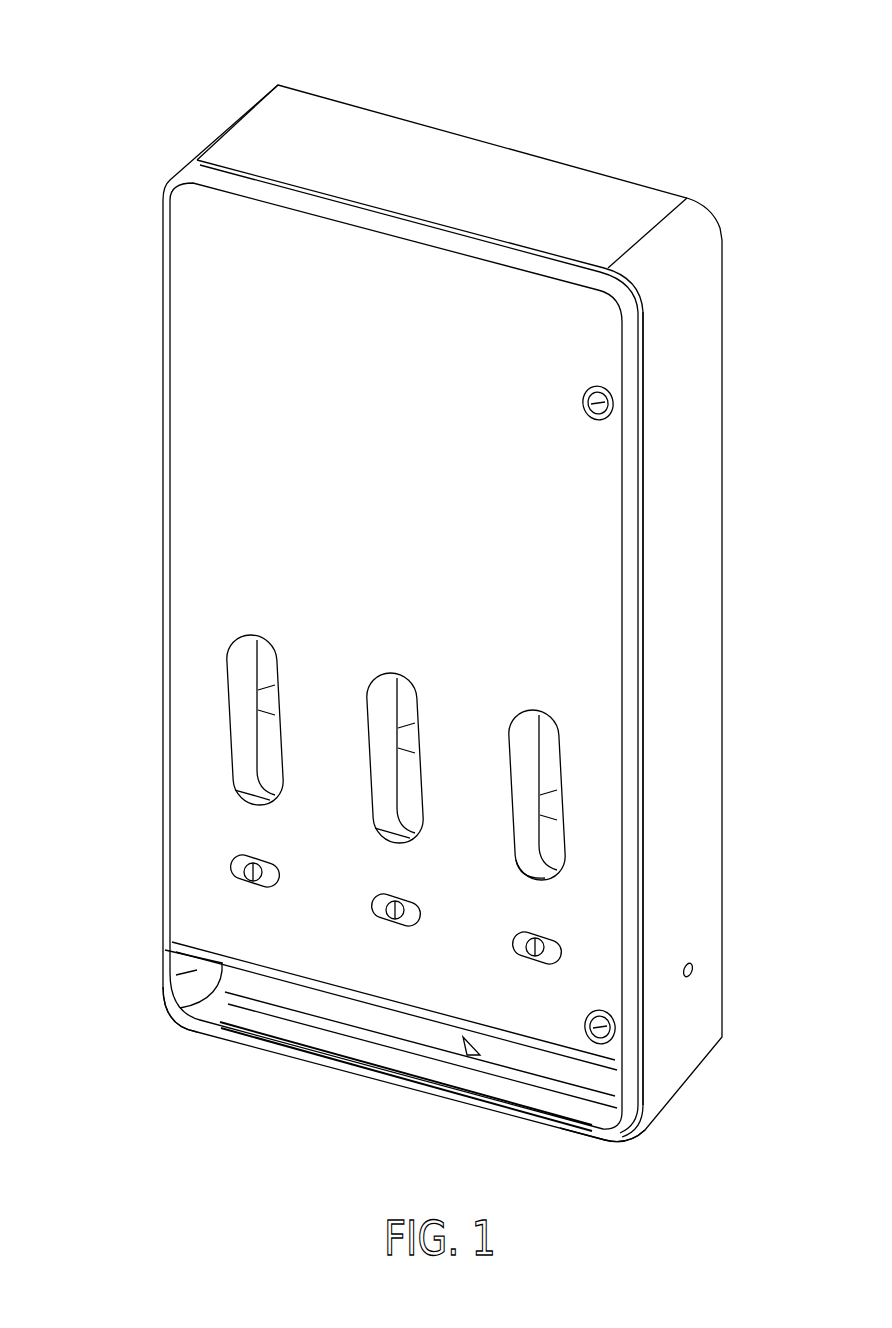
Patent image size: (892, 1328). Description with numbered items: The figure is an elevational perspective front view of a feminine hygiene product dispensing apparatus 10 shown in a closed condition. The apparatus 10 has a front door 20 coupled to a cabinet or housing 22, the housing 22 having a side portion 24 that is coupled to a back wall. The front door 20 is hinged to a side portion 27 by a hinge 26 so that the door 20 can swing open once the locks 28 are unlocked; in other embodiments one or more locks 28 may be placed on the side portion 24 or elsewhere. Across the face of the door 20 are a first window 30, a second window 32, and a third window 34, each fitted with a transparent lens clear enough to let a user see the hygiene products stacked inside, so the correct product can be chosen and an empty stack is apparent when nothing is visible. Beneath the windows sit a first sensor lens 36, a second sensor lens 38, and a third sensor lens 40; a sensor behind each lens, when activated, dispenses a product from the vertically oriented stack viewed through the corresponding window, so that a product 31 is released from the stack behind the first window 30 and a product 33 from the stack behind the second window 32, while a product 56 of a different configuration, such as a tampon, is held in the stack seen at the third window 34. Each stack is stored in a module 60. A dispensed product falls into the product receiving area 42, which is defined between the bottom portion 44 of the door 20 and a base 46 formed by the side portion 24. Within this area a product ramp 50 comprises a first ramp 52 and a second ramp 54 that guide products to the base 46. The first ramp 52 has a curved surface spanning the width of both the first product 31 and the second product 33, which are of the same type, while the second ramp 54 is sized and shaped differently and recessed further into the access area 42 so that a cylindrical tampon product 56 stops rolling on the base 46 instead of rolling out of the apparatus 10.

The feminine hygiene product dispensing apparatus 10 is at (740, 77).
The front door 20 is at (185, 541).
The housing 22 is at (197, 130).
The side portion 24 is at (714, 631).
The hinge 26 is at (160, 413).
The side portion 27 is at (158, 292).
The locks 28 is at (612, 405).
The first window 30 is at (277, 630).
The product 31 is at (268, 703).
The second window 32 is at (420, 670).
The product 33 is at (410, 741).
The third window 34 is at (558, 710).
The first sensor lens 36 is at (278, 853).
The second sensor lens 38 is at (421, 890).
The third sensor lens 40 is at (559, 928).
The product receiving area 42 is at (153, 995).
The bottom portion 44 is at (186, 941).
The base 46 is at (601, 1139).
The product ramp 50 is at (411, 1044).
The first ramp 52 is at (300, 1000).
The second ramp 54 is at (570, 1072).
The product 56 is at (551, 812).
The module 60 is at (526, 878).